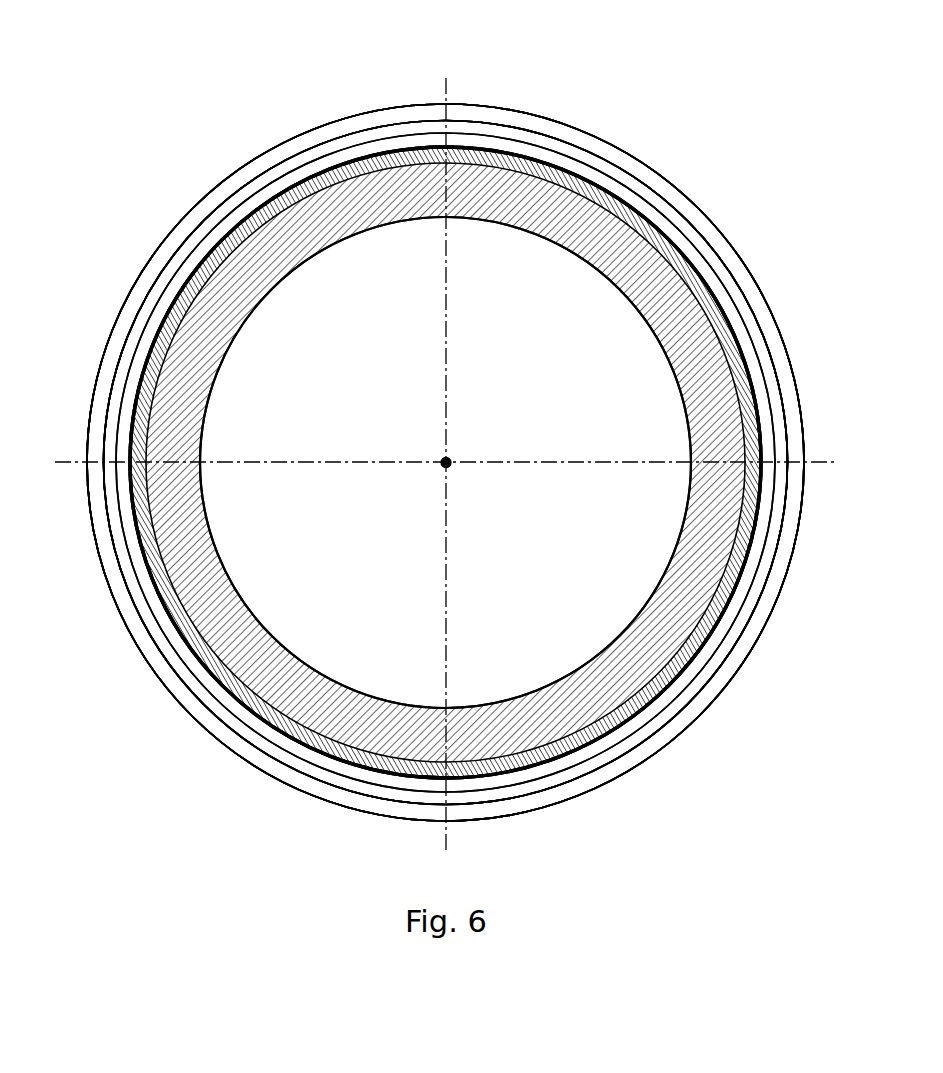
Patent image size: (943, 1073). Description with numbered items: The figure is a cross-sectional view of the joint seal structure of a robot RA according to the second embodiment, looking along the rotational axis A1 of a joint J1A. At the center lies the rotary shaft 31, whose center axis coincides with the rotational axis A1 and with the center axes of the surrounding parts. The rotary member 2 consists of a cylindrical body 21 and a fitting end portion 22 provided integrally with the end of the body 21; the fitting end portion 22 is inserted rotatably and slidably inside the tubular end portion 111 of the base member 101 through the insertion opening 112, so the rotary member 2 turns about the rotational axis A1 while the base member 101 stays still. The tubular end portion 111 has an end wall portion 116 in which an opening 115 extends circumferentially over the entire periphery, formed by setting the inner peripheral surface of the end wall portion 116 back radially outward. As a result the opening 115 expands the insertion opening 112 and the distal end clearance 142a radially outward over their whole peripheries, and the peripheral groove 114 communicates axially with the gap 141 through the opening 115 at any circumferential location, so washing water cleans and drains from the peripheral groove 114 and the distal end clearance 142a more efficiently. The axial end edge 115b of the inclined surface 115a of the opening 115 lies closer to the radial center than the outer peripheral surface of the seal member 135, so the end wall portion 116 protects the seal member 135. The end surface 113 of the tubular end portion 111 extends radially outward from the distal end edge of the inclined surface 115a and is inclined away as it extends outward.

The base member 101 is at (737, 248).
The tubular end portion 111 is at (703, 230).
The insertion opening 112 is at (347, 135).
The end surface 113 is at (193, 222).
The peripheral groove 114 is at (257, 195).
The opening 115 is at (393, 147).
The inclined surface 115a is at (175, 262).
The axial end edge 115b is at (135, 288).
The end wall portion 116 is at (290, 158).
The rotary member 2 is at (585, 178).
The body 21 is at (538, 187).
The fitting end portion 22 is at (505, 152).
The rotary shaft 31 is at (372, 386).
The seal member 135 is at (125, 430).
The gap 141 is at (245, 755).
The distal end clearance 142a is at (272, 738).
The rotational axis A1 is at (452, 453).
The joint J1A is at (663, 167).
The robot RA is at (698, 725).